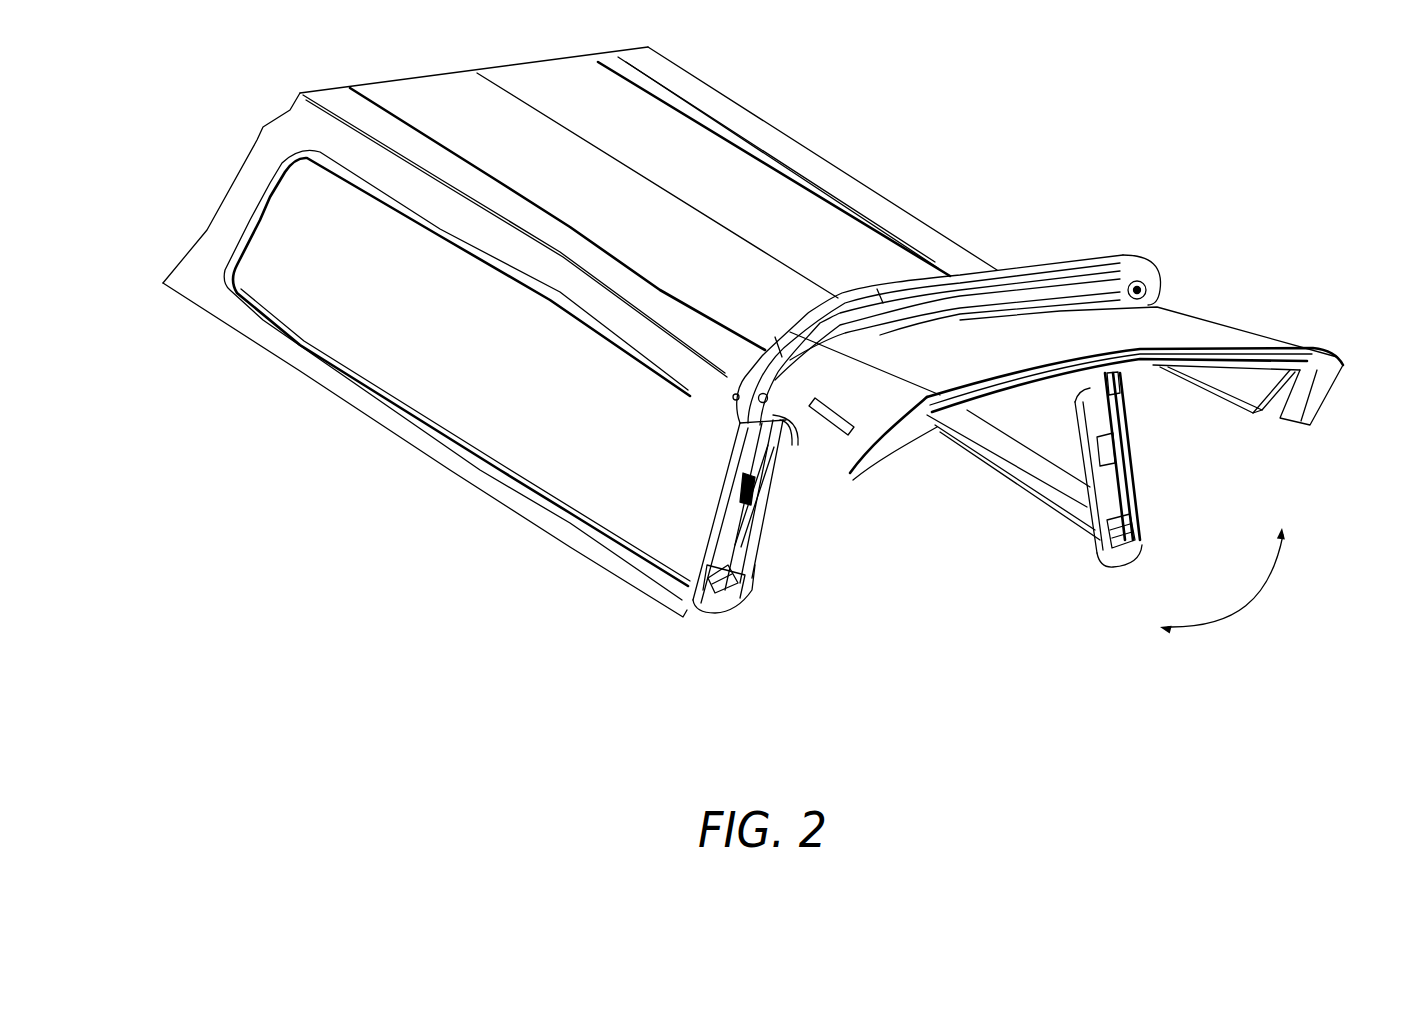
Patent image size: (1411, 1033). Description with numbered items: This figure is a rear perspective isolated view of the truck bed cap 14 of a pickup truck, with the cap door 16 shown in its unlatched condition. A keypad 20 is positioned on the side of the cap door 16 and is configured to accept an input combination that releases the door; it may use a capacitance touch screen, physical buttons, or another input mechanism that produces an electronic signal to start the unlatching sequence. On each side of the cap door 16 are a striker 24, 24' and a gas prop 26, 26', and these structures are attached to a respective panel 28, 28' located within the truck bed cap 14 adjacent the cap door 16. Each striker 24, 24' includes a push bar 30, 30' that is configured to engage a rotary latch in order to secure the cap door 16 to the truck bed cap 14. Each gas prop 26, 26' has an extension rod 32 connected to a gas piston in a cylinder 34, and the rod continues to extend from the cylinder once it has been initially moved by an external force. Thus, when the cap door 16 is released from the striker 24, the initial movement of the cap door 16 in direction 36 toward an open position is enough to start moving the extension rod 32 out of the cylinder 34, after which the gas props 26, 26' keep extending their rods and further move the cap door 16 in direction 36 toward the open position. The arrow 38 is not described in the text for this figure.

The truck bed cap 14 is at (843, 150).
The cap door 16 is at (1232, 315).
The keypad 20 is at (848, 425).
The striker 24 is at (715, 620).
The striker 24' is at (1170, 517).
The gas prop 26 is at (719, 422).
The gas prop 26' is at (1159, 402).
The panel 28 is at (759, 516).
The panel 28' is at (1149, 470).
The push bar 30 is at (763, 590).
The push bar 30' is at (1168, 547).
The extension rod 32 is at (762, 458).
The cylinder 34 is at (733, 392).
The direction 36 is at (1290, 537).
The direction of link rotation 38 is at (1166, 635).